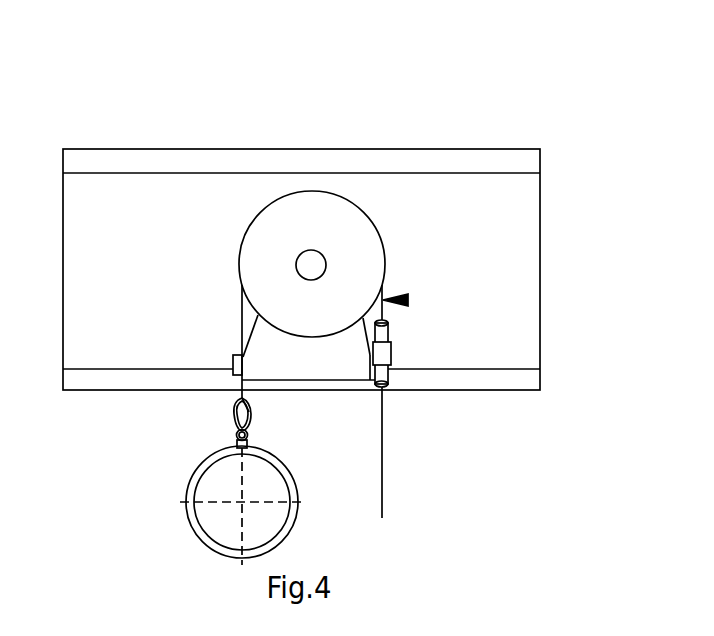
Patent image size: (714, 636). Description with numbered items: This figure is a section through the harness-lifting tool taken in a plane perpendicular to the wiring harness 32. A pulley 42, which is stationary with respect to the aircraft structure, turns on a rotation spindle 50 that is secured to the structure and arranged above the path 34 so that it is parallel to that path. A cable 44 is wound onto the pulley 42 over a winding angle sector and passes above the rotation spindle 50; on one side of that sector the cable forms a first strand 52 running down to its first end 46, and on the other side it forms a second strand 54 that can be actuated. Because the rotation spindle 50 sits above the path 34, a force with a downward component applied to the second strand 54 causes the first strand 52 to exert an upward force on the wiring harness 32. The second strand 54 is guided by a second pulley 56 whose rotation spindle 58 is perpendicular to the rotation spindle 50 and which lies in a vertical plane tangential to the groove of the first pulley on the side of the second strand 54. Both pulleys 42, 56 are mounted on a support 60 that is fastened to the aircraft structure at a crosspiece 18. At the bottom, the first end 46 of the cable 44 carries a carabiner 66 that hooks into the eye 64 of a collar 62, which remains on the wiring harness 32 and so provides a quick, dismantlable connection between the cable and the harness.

The crosspiece 18 is at (522, 157).
The pulley 42 is at (312, 202).
The rotation spindle 50 is at (316, 262).
The cable 44 is at (408, 300).
The first strand 52 is at (242, 330).
The support 60 is at (325, 370).
The second pulley 56 is at (388, 338).
The rotation spindle 58 is at (391, 360).
The second strand 54 is at (383, 427).
The first end 46 is at (237, 414).
The carabiner 66 is at (229, 420).
The eye 64 is at (248, 437).
The wiring harness 32 is at (210, 476).
The collar 62 is at (298, 510).
The path 34 is at (242, 503).